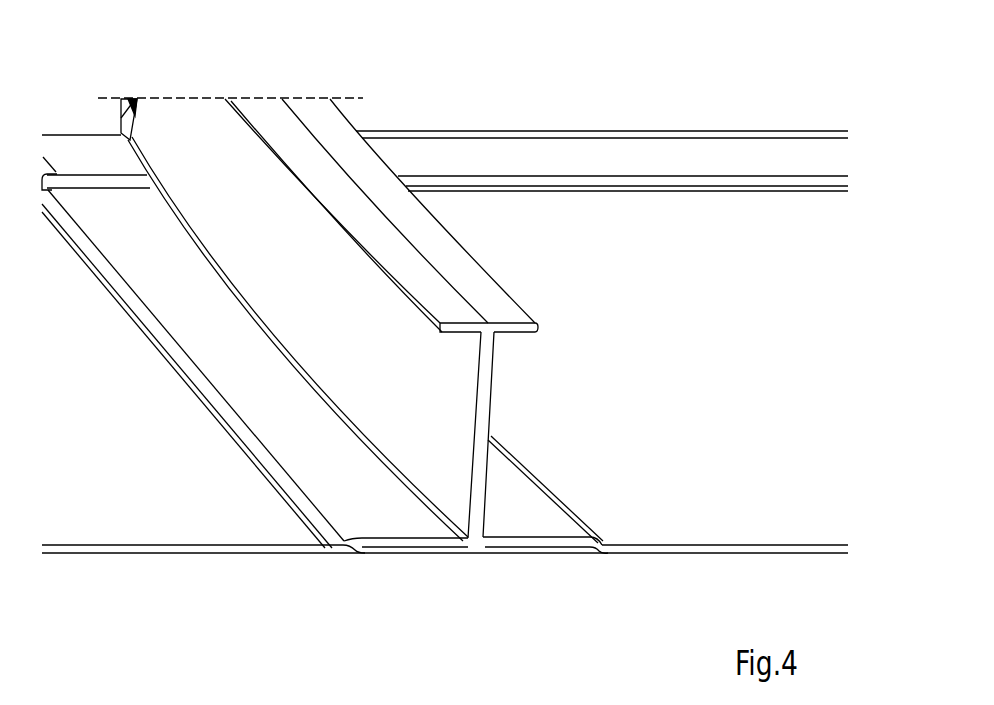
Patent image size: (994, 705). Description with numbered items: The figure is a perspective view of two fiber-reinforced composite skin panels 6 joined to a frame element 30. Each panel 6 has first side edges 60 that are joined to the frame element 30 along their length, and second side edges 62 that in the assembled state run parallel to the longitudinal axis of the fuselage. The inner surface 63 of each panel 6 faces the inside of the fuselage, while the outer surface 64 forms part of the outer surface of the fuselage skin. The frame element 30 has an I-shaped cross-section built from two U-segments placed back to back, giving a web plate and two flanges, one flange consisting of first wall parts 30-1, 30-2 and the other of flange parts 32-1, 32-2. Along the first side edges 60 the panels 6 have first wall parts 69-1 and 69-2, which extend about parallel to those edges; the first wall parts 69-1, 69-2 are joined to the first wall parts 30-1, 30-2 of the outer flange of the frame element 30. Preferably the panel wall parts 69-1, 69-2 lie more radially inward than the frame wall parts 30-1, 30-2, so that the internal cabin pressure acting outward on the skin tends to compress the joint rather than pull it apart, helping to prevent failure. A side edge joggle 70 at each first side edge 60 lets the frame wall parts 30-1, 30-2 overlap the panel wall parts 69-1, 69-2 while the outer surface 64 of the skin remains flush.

The fiber-reinforced composite skin panel 6 is at (203, 556).
The frame element 30 is at (346, 327).
The first wall part of frame element 30-1 is at (533, 548).
The first wall part of frame element 30-2 is at (393, 548).
The flange part of frame element 32-1 is at (315, 117).
The flange part of frame element 32-2 is at (265, 117).
The first side edge 60 is at (462, 545).
The second side edge 62 is at (162, 549).
The inner surface 63 is at (135, 464).
The outer surface 64 is at (125, 556).
The first wall part of skin panel 69-1 is at (570, 530).
The first wall part of skin panel 69-2 is at (418, 531).
The side edge joggle 70 is at (343, 551).